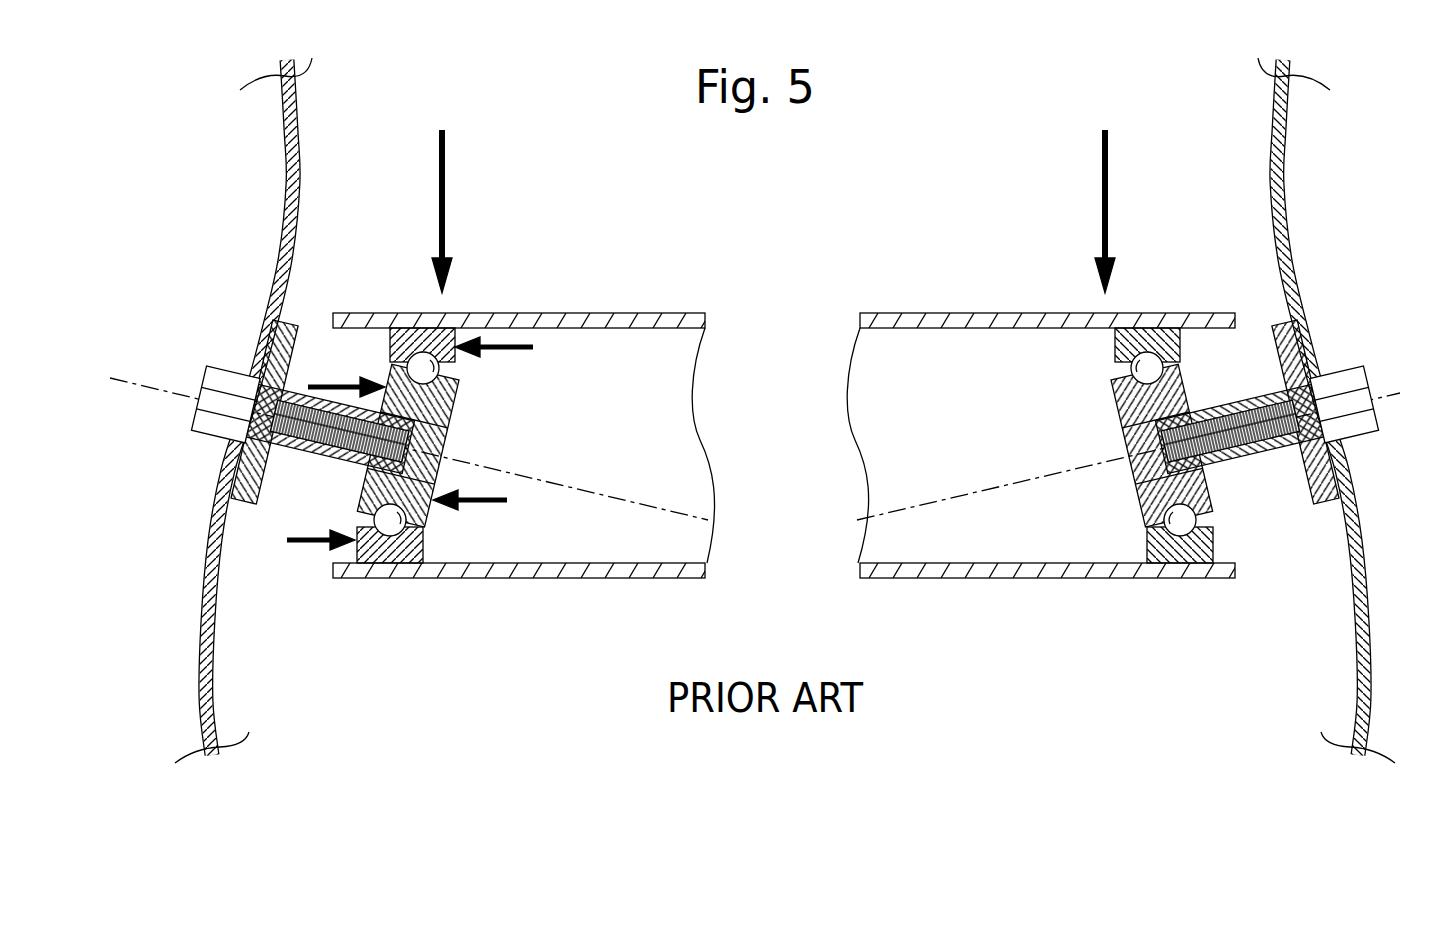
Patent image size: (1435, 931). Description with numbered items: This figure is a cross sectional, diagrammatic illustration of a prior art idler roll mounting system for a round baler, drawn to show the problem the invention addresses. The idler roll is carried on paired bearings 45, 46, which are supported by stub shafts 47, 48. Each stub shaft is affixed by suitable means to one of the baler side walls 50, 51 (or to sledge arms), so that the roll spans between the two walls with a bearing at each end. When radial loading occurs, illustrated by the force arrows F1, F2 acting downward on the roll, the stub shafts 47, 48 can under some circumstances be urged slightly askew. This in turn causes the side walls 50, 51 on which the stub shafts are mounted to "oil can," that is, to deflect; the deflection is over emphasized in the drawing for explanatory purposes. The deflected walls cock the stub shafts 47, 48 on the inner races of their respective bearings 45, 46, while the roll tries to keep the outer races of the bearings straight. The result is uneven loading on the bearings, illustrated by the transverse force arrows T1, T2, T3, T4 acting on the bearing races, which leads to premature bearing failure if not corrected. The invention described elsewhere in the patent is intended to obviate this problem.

The bearing 45 is at (473, 400).
The bearing 46 is at (1060, 377).
The stub shaft 47 is at (443, 438).
The stub shaft 48 is at (1117, 445).
The side wall 50 is at (281, 220).
The side wall 51 is at (1288, 222).
The force arrow F1 is at (446, 193).
The force arrow F2 is at (1107, 193).
The transverse force arrow T1 is at (516, 347).
The transverse force arrow T2 is at (492, 507).
The transverse force arrow T3 is at (345, 376).
The transverse force arrow T4 is at (313, 528).